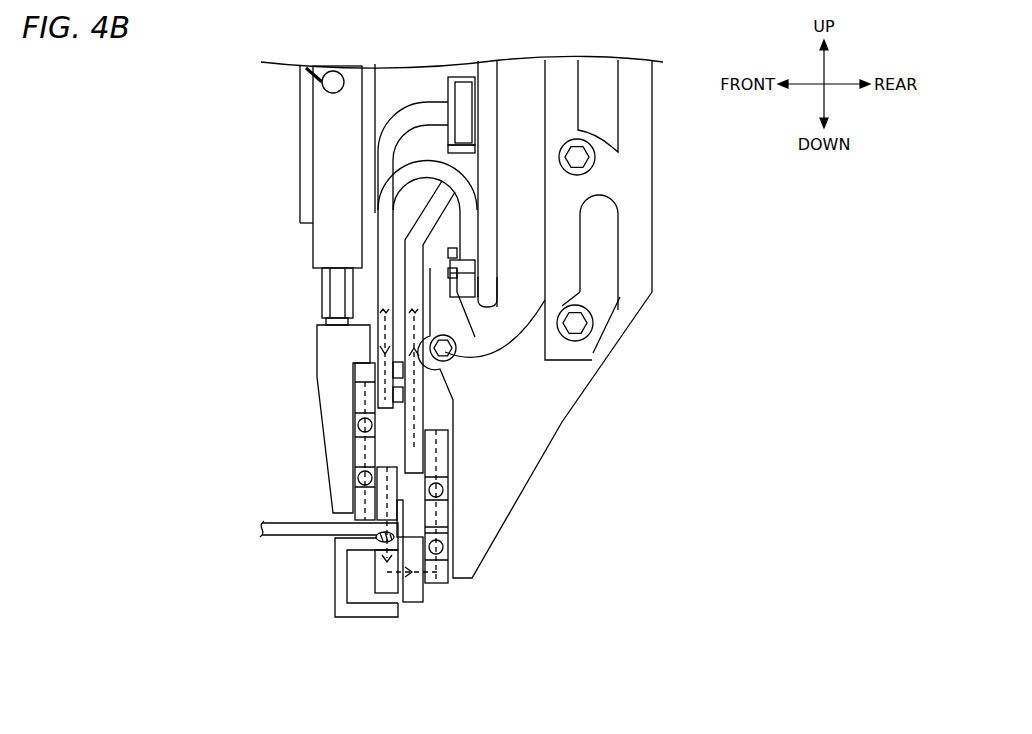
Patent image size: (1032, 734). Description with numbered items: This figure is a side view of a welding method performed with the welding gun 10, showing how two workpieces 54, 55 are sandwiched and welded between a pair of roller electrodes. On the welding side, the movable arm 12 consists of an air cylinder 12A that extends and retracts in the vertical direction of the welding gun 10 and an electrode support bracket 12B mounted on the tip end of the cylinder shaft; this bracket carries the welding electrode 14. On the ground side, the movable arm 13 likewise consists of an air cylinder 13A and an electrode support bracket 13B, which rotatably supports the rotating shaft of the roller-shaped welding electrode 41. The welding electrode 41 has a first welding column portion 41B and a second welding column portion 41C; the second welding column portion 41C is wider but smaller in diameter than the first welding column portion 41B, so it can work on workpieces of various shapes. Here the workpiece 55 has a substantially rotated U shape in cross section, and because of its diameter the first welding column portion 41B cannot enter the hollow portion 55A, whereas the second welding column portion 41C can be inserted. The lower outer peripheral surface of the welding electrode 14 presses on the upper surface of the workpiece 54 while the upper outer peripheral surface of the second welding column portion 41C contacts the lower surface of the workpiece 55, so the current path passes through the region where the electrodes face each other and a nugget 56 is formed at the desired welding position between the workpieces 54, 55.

The welding gun 10 is at (432, 55).
The movable arm 12 is at (216, 318).
The air cylinder 12A is at (333, 245).
The electrode support bracket 12B is at (333, 357).
The movable arm 13 is at (757, 268).
The air cylinder 13A is at (463, 113).
The electrode support bracket 13B is at (530, 410).
The welding electrode 14 is at (388, 475).
The welding electrode 41 is at (455, 655).
The first welding column portion 41B is at (413, 590).
The second welding column portion 41C is at (390, 582).
The workpiece 54 is at (278, 528).
The workpiece 55 is at (340, 572).
The hollow portion 55A is at (360, 576).
The nugget 56 is at (377, 538).